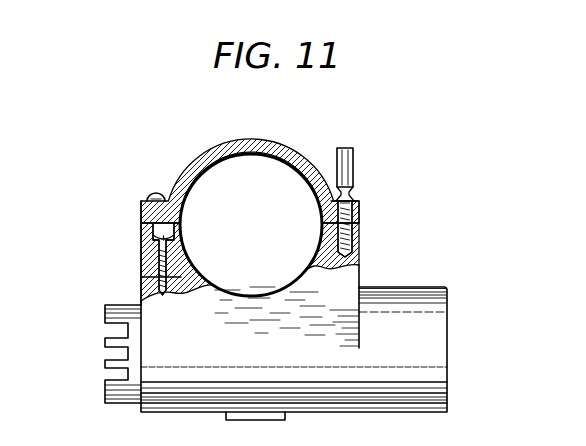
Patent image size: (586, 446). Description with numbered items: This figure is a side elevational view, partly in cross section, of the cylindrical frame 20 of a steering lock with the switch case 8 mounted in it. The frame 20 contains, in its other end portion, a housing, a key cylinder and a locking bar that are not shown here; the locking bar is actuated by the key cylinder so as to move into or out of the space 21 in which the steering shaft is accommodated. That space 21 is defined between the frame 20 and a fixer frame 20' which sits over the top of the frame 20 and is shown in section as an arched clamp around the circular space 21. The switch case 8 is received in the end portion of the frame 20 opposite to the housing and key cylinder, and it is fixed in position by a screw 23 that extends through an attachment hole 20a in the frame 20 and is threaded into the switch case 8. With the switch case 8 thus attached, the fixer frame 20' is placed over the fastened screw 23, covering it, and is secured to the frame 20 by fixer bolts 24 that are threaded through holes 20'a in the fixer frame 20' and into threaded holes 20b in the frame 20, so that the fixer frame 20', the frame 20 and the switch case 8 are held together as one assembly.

The cylindrical frame 20 is at (323, 342).
The fixer frame 20' is at (250, 162).
The attachment hole 20a is at (141, 229).
The holes in the fixer frame 20'a is at (373, 235).
The threaded holes 20b is at (353, 247).
The space 21 is at (273, 182).
The screw 23 is at (157, 247).
The fixer bolts 24 is at (148, 196).
The switch case 8 is at (105, 315).